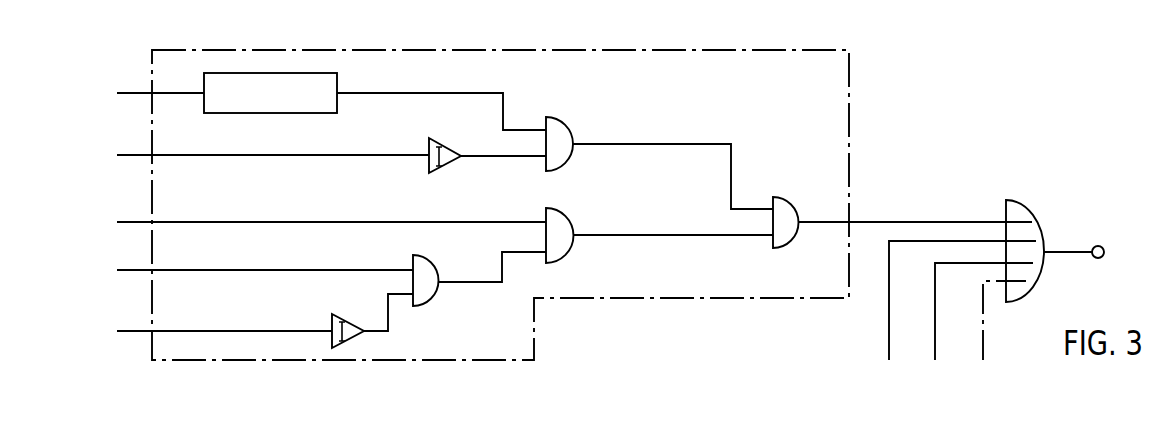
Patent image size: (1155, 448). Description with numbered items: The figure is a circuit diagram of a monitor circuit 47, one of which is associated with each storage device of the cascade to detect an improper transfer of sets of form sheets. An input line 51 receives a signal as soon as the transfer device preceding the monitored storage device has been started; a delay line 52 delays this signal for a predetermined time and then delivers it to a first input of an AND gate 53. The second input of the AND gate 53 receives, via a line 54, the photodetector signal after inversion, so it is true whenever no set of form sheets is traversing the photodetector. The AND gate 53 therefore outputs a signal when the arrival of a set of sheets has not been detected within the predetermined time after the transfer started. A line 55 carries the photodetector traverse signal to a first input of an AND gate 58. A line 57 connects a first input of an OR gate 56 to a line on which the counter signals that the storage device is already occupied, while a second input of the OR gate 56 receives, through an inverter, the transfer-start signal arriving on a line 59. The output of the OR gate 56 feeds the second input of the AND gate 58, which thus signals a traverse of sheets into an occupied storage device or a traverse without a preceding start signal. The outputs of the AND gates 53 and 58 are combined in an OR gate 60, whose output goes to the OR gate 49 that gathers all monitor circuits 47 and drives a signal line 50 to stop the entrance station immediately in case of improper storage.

The monitor circuit 47 is at (690, 50).
The OR gate 49 is at (1030, 210).
The signal line 50 is at (1068, 250).
The input line 51 is at (131, 93).
The delay line 52 is at (260, 73).
The AND gate 53 is at (566, 130).
The line 54 is at (131, 155).
The line 55 is at (131, 222).
The OR gate 56 is at (438, 266).
The line 57 is at (131, 270).
The AND gate 58 is at (566, 224).
The line 59 is at (131, 331).
The OR gate 60 is at (788, 204).